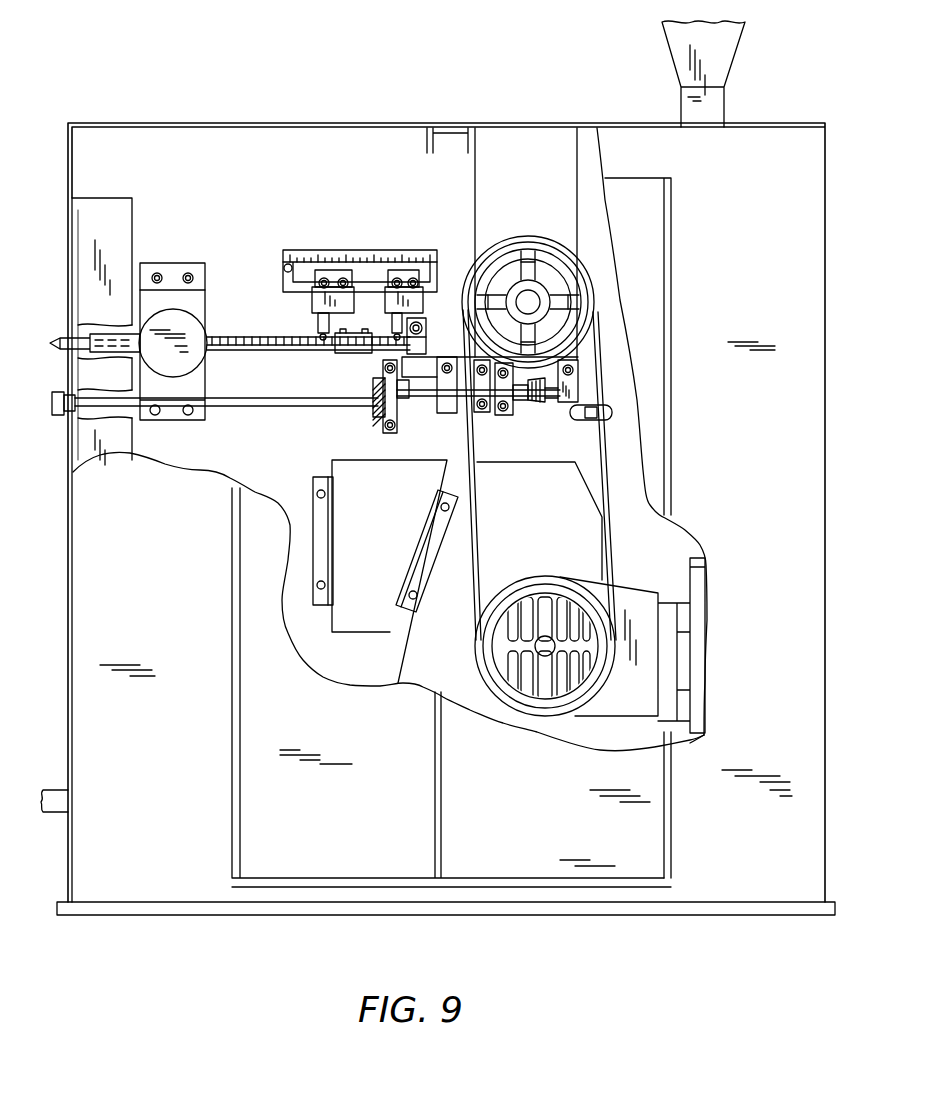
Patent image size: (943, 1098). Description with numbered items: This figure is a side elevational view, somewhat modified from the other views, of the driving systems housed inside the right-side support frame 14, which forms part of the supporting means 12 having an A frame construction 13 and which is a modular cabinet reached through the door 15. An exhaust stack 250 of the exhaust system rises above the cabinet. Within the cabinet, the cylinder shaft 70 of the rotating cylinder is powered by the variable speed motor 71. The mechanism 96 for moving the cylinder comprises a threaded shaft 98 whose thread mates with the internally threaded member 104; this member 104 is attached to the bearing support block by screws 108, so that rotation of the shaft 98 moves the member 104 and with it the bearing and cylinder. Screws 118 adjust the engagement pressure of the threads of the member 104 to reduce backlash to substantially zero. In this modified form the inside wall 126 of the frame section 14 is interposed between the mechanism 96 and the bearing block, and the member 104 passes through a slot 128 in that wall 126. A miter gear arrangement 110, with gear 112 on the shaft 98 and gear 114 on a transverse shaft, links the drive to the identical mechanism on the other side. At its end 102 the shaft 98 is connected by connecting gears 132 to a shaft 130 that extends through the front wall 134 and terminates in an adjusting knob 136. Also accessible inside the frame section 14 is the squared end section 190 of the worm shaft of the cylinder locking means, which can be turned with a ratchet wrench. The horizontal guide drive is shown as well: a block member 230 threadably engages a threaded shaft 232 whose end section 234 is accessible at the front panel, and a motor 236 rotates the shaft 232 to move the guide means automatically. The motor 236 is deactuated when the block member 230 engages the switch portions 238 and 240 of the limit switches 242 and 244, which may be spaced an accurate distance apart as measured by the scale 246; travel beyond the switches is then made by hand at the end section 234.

The supporting means 12 is at (642, 535).
The A frame construction 13 is at (591, 483).
The right-side support frame 14 is at (146, 104).
The door 15 is at (398, 857).
The cylinder shaft 70 is at (532, 298).
The variable speed motor 71 is at (560, 705).
The mechanism for moving the cylinder 96 is at (440, 413).
The threaded shaft 98 is at (420, 400).
The end of shaft 102 is at (370, 386).
The member 104 is at (480, 410).
The screws 108 is at (433, 340).
The miter gear arrangement 110 is at (548, 410).
The gear 112 is at (540, 404).
The gear 114 is at (530, 400).
The screws 118 is at (463, 412).
The inside wall 126 is at (232, 157).
The slot 128 is at (433, 335).
The shaft 130 is at (264, 406).
The connecting gears 132 is at (375, 419).
The front wall 134 is at (71, 462).
The adjusting knob 136 is at (60, 393).
The squared end section 190 is at (588, 414).
The block member 230 is at (348, 350).
The threaded shaft 232 is at (238, 350).
The end section 234 is at (60, 338).
The motor 236 is at (190, 340).
The switch portion 238 is at (392, 327).
The switch portion 240 is at (318, 327).
The limit switch 242 is at (419, 299).
The limit switch 244 is at (316, 299).
The scale 246 is at (348, 258).
The exhaust stack 250 is at (720, 82).